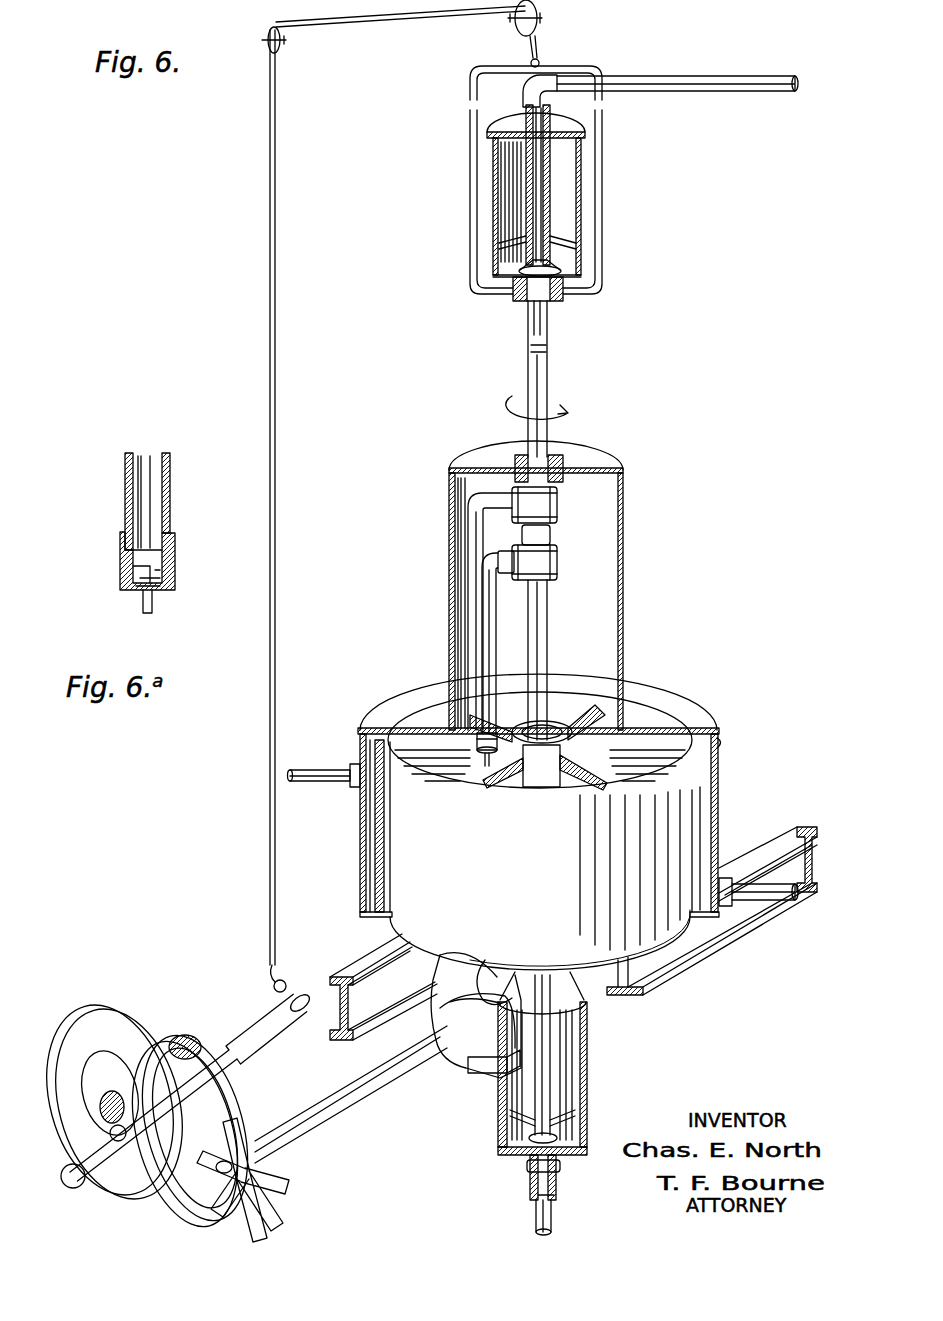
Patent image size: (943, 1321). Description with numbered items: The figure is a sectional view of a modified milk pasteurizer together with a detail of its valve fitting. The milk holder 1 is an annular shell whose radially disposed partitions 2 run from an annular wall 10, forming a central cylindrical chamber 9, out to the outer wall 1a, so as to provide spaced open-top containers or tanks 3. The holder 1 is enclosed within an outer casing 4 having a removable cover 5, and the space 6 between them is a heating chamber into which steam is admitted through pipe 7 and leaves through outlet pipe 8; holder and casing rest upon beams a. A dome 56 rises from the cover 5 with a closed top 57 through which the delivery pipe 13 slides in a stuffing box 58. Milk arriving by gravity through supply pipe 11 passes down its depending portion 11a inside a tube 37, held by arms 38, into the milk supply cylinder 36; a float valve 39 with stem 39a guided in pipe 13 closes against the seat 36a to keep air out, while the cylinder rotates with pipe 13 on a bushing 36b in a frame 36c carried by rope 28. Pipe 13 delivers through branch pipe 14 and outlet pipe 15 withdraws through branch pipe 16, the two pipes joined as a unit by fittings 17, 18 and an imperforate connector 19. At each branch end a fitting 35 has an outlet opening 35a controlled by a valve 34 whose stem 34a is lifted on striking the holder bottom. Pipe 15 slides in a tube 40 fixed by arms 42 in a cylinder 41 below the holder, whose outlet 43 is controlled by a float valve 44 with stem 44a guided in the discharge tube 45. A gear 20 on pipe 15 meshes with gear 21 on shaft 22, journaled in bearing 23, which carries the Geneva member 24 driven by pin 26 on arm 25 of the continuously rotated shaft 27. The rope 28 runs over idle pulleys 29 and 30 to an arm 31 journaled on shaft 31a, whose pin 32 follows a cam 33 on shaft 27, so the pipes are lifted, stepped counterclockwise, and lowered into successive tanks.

In FIG. 6, the milk holder 1 is at (668, 822).
In FIG. 6, the outer wall of the holder 1a is at (565, 800).
In FIG. 6, the radially disposed partitions 2 is at (500, 800).
In FIG. 6, the containers or tanks 3 is at (440, 745).
In FIG. 6, the outer casing 4 is at (720, 742).
In FIG. 6, the removable cover 5 is at (668, 698).
In FIG. 6, the space or heating chamber 6 is at (713, 790).
In FIG. 6, the steam inlet pipe 7 is at (770, 905).
In FIG. 6, the steam outlet pipe 8 is at (345, 768).
In FIG. 6, the cylindrical chamber 9 is at (552, 733).
In FIG. 6, the annular wall 10 is at (585, 728).
In FIG. 6, the supply pipe 11 is at (738, 92).
In FIG. 6, the depending portion of supply pipe 11a is at (535, 182).
In FIG. 6, the milk delivery pipe 13 is at (548, 383).
In FIG. 6, the branch pipe 14 is at (466, 506).
In FIG. 6, the outlet pipe 15 is at (549, 614).
In FIG. 6, the branch pipe 16 is at (481, 616).
In FIG. 6A, the branch pipe 16 is at (170, 470).
In FIG. 6, the T or elbow fitting 17 is at (558, 502).
In FIG. 6, the T or elbow fitting 18 is at (558, 560).
In FIG. 6, the imperforate connector 19 is at (551, 534).
In FIG. 6, the gear 20 is at (589, 933).
In FIG. 6, the gear 21 is at (435, 1005).
In FIG. 6, the shaft 22 is at (400, 1080).
In FIG. 6, the bearing 23 is at (470, 1075).
In FIG. 6, the Geneva movement member 24 is at (280, 1165).
In FIG. 6, the arm 25 is at (243, 1067).
In FIG. 6, the pin or projection 26 is at (175, 1195).
In FIG. 6, the shaft 27 is at (298, 985).
In FIG. 6, the rope 28 is at (384, 26).
In FIG. 6, the idle pulley 29 is at (540, 10).
In FIG. 6, the idle pulley 30 is at (283, 37).
In FIG. 6, the arm 31 is at (240, 1018).
In FIG. 6, the shaft 31a is at (66, 1188).
In FIG. 6, the projection or pin 32 is at (110, 1135).
In FIG. 6, the cam 33 is at (95, 1040).
In FIG. 6A, the valve 34 is at (126, 572).
In FIG. 6, the valve stem 34a is at (485, 768).
In FIG. 6A, the valve stem 34a is at (148, 615).
In FIG. 6, the fitting 35 is at (477, 740).
In FIG. 6A, the fitting 35 is at (176, 565).
In FIG. 6A, the outlet opening 35a is at (152, 598).
In FIG. 6, the milk supply cylinder 36 is at (581, 205).
In FIG. 6, the outlet seat 36a is at (563, 298).
In FIG. 6, the bushing 36b is at (560, 300).
In FIG. 6, the frame 36c is at (603, 258).
In FIG. 6, the tube 37 is at (552, 180).
In FIG. 6, the arms 38 is at (498, 245).
In FIG. 6, the float valve 39 is at (500, 290).
In FIG. 6, the float valve stem 39a is at (531, 318).
In FIG. 6, the tube 40 is at (560, 1028).
In FIG. 6, the cylinder 41 is at (588, 1112).
In FIG. 6, the arms 42 is at (497, 1138).
In FIG. 6, the outlet 43 is at (560, 1166).
In FIG. 6, the float valve 44 is at (500, 1158).
In FIG. 6, the float valve stem 44a is at (534, 1194).
In FIG. 6, the milk discharge tube 45 is at (552, 1215).
In FIG. 6, the dome 56 is at (625, 568).
In FIG. 6, the closed top of dome 57 is at (594, 462).
In FIG. 6, the stuffing box 58 is at (565, 465).
In FIG. 6, the beams a is at (668, 975).